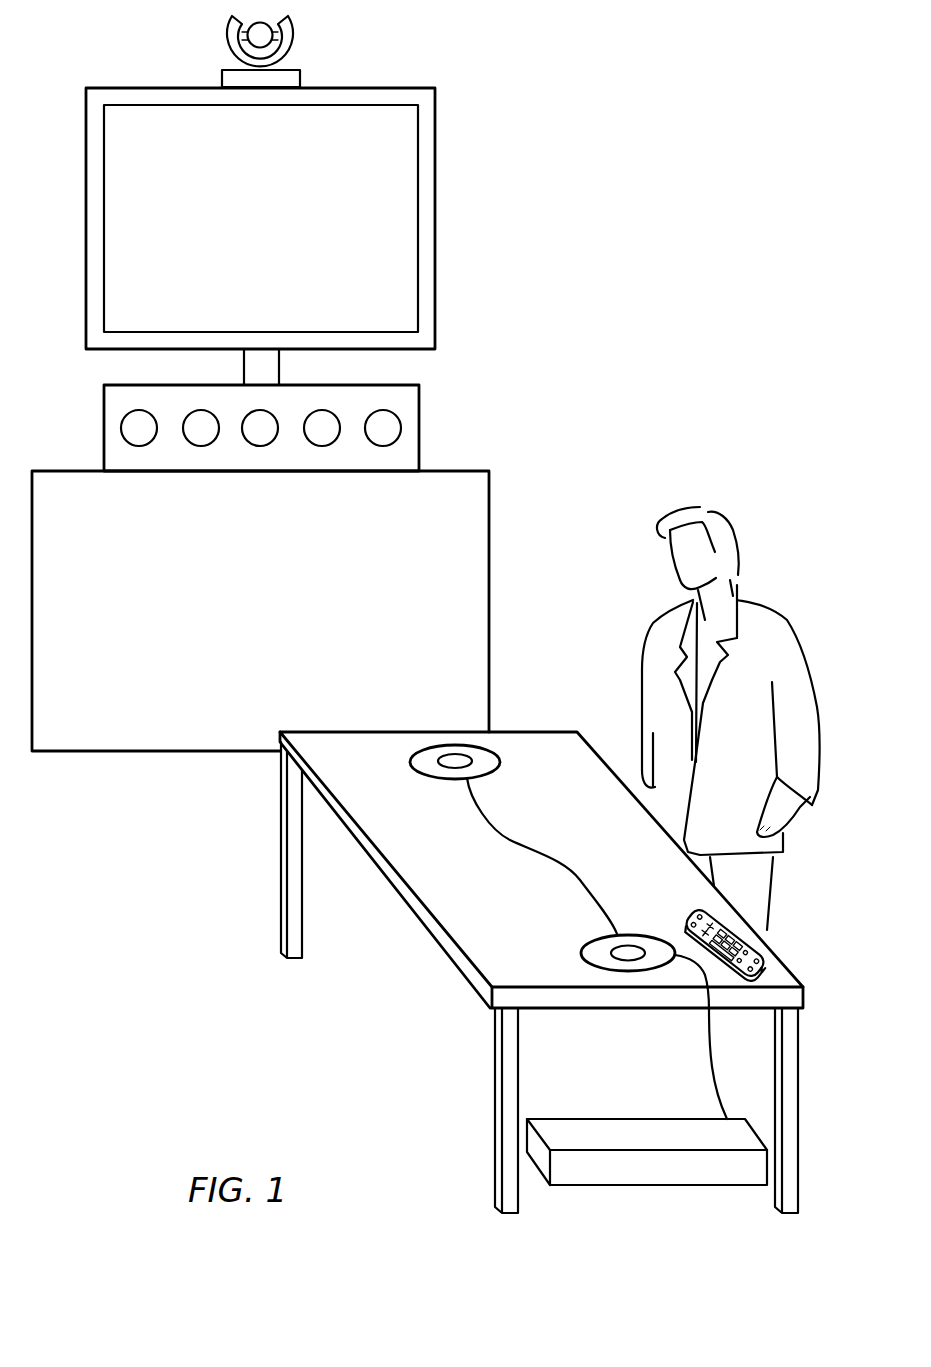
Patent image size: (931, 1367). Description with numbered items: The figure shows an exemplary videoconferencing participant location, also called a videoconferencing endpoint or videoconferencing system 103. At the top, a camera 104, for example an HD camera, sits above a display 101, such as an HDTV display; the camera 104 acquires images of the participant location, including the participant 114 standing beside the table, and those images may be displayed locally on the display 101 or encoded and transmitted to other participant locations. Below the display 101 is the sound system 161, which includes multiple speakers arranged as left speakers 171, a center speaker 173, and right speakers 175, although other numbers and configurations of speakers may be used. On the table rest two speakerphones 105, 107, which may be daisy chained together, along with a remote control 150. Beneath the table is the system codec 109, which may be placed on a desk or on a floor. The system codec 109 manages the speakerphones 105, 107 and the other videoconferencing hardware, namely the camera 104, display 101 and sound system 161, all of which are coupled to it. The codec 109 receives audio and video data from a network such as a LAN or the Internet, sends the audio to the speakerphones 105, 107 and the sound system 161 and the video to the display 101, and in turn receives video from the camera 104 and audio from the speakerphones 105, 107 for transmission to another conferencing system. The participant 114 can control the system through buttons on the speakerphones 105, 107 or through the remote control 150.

The display 101 is at (437, 173).
The videoconferencing system 103 is at (593, 123).
The camera 104 is at (293, 32).
The speakerphone 105 is at (588, 938).
The speakerphone 107 is at (490, 752).
The system codec 109 is at (672, 1185).
The participant 114 is at (735, 535).
The remote control 150 is at (700, 917).
The sound system 161 is at (296, 442).
The left speakers 171 is at (227, 445).
The center speaker 173 is at (287, 445).
The right speakers 175 is at (410, 445).